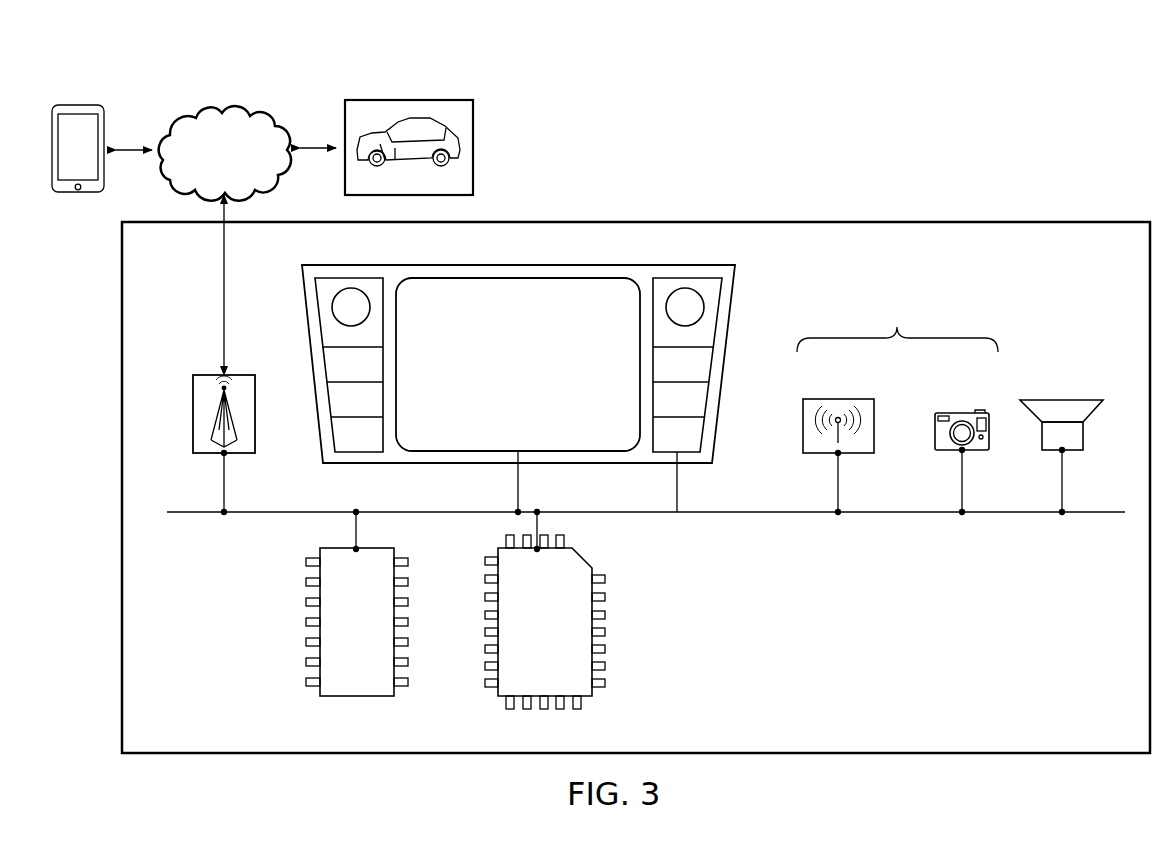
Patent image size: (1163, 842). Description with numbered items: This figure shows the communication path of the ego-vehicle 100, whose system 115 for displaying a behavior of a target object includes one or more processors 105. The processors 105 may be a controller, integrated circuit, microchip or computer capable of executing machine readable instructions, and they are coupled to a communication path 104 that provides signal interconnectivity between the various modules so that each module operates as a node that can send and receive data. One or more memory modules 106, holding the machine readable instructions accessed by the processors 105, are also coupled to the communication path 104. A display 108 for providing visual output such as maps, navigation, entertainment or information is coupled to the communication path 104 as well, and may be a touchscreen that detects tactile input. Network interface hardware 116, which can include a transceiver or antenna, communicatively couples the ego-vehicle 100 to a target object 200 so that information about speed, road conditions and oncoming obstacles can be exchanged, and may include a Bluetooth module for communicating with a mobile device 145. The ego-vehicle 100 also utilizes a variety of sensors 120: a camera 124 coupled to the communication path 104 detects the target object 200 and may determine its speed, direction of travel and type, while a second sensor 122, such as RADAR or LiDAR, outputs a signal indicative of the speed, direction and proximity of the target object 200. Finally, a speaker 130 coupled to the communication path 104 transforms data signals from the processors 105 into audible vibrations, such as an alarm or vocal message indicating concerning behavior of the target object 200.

The ego-vehicle 100 is at (636, 456).
The communication path 104 is at (272, 514).
The one or more processors 105 is at (500, 698).
The one or more memory modules 106 is at (357, 698).
The display 108 is at (508, 285).
The system for displaying a behavior of a target object 115 is at (947, 262).
The network interface hardware 116 is at (193, 382).
The sensors 120 is at (897, 407).
The second sensor 122 is at (833, 398).
The camera 124 is at (963, 413).
The speaker 130 is at (1060, 399).
The mobile device 145 is at (104, 119).
The target object 200 is at (475, 150).